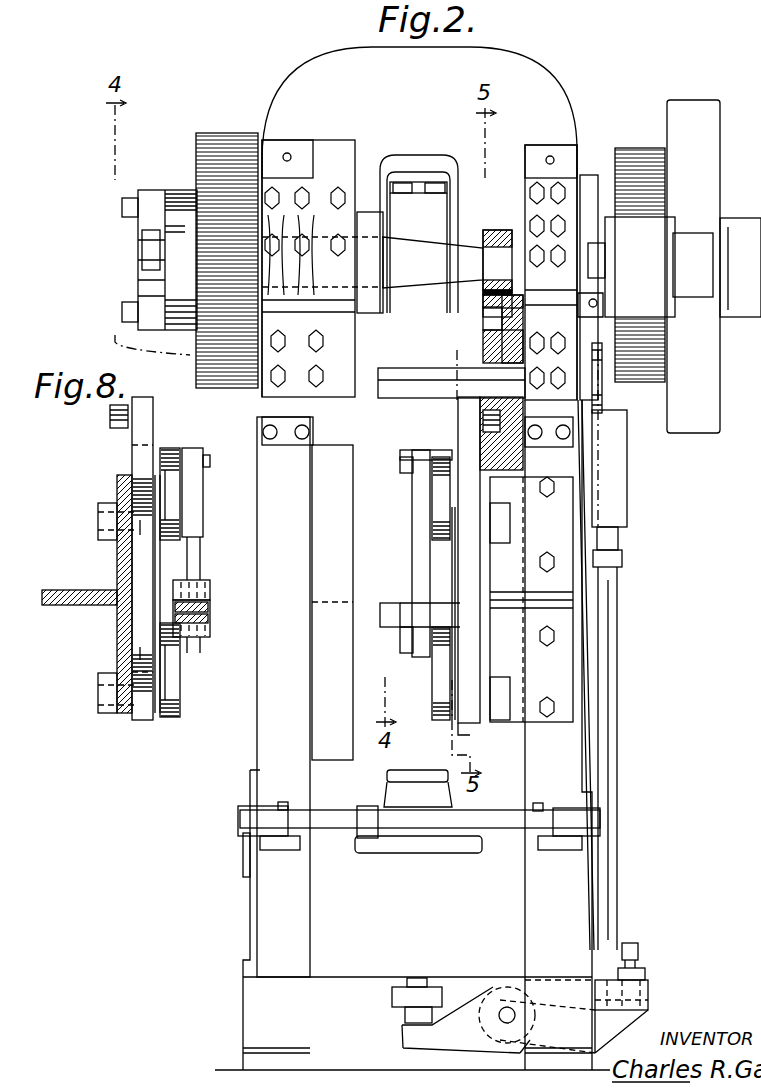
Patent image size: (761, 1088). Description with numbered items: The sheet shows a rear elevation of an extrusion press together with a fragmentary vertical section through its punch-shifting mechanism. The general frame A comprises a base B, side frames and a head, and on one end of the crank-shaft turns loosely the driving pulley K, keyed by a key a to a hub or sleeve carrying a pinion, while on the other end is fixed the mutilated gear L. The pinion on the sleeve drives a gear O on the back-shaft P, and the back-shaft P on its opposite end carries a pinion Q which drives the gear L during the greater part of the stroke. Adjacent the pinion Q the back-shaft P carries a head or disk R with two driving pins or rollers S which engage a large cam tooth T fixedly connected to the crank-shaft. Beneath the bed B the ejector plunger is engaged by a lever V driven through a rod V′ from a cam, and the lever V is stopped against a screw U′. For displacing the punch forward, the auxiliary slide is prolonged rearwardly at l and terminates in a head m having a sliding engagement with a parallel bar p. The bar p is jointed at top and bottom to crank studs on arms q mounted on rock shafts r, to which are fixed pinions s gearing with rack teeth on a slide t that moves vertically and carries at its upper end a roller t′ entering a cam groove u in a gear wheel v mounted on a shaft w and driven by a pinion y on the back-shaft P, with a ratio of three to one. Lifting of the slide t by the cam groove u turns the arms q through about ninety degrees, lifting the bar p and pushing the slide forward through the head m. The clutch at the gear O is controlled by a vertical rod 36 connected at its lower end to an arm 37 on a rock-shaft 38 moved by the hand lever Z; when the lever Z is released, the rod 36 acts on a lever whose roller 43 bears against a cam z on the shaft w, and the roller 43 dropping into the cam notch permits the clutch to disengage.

In FIG. 2, the general frame A is at (412, 743).
In FIG. 2, the base B is at (530, 735).
In FIG. 2, the driving pulley K is at (714, 266).
In FIG. 2, the gear L is at (224, 135).
In FIG. 2, the gear o is at (630, 150).
In FIG. 2, the back-shaft P is at (433, 262).
In FIG. 2, the pinion Q is at (220, 230).
In FIG. 2, the head or disk R is at (165, 190).
In FIG. 2, the driving pins or rollers S is at (145, 208).
In FIG. 2, the cam tooth T is at (148, 246).
In FIG. 2, the lever V is at (660, 1005).
In FIG. 2, the rod V′ is at (614, 742).
In FIG. 2, the screw U′ is at (640, 952).
In FIG. 2, the hand lever Z is at (243, 863).
In FIG. 2, the key a is at (398, 790).
In FIG. 2, the parallel bar p is at (412, 550).
In FIG. 8, the parallel bar p is at (196, 515).
In FIG. 2, the arms q is at (440, 485).
In FIG. 8, the arms q is at (168, 484).
In FIG. 2, the rock shafts r is at (510, 522).
In FIG. 8, the rock shafts r is at (98, 526).
In FIG. 8, the pinions s is at (140, 535).
In FIG. 2, the slide t is at (470, 725).
In FIG. 8, the slide t is at (134, 462).
In FIG. 2, the roller t′ is at (483, 422).
In FIG. 8, the roller t′ is at (112, 415).
In FIG. 2, the cam groove u is at (484, 320).
In FIG. 2, the gear wheel v is at (484, 350).
In FIG. 2, the shaft w is at (432, 388).
In FIG. 2, the pinion y is at (493, 238).
In FIG. 2, the cam z is at (604, 404).
In FIG. 8, the rearward prolongation l is at (210, 628).
In FIG. 8, the head m is at (210, 585).
In FIG. 2, the rod 36 is at (588, 622).
In FIG. 2, the arm 37 is at (600, 818).
In FIG. 2, the rock-shaft 38 is at (442, 828).
In FIG. 2, the roller 43 is at (590, 318).